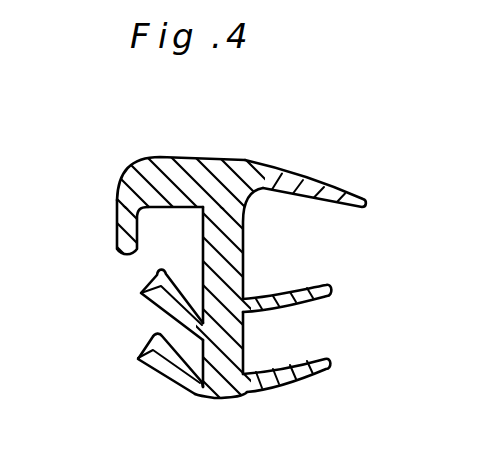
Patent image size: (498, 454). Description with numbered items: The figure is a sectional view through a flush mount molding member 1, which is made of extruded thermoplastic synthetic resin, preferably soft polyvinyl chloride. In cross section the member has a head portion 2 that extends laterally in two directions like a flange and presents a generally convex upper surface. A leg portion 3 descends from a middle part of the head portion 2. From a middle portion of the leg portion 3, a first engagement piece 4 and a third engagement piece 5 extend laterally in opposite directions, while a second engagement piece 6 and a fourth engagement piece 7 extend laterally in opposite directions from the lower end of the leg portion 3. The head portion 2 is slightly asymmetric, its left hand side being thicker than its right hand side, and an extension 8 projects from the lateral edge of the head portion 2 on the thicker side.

The flush mount molding member 1 is at (345, 183).
The head portion 2 is at (190, 158).
The leg portion 3 is at (245, 258).
The first engagement piece 4 is at (140, 292).
The third engagement piece 5 is at (308, 307).
The second engagement piece 6 is at (138, 360).
The fourth engagement piece 7 is at (300, 384).
The extension 8 is at (117, 240).